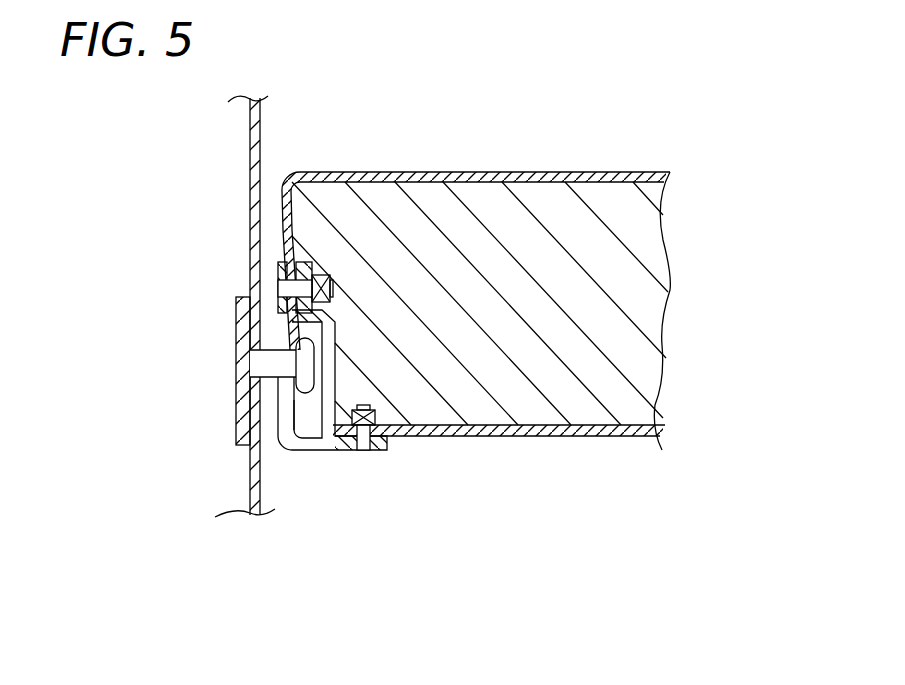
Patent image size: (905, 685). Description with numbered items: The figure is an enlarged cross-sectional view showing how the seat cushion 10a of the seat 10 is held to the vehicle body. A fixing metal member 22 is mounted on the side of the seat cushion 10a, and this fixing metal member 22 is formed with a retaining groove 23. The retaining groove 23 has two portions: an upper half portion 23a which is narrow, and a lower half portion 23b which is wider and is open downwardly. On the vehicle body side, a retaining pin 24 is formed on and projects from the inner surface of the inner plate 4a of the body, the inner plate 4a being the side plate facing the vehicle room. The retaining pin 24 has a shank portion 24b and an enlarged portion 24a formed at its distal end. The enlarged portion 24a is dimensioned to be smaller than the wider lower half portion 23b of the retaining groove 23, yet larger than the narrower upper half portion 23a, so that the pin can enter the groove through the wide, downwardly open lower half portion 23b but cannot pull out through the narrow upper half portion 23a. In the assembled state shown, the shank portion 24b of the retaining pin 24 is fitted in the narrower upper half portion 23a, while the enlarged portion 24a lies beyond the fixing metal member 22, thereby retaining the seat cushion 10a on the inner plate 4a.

The inner plate 4a is at (262, 143).
The seat cushion 10 is at (508, 254).
The seat cushion 10a is at (538, 172).
The fixing metal member 22 is at (278, 310).
The retaining groove 23 is at (410, 446).
The upper half portion of the retaining groove 23a is at (332, 365).
The lower half portion of the retaining groove 23b is at (285, 416).
The retaining pin 24 is at (250, 372).
The enlarged portion 24a is at (300, 388).
The shank portion 24b is at (263, 359).